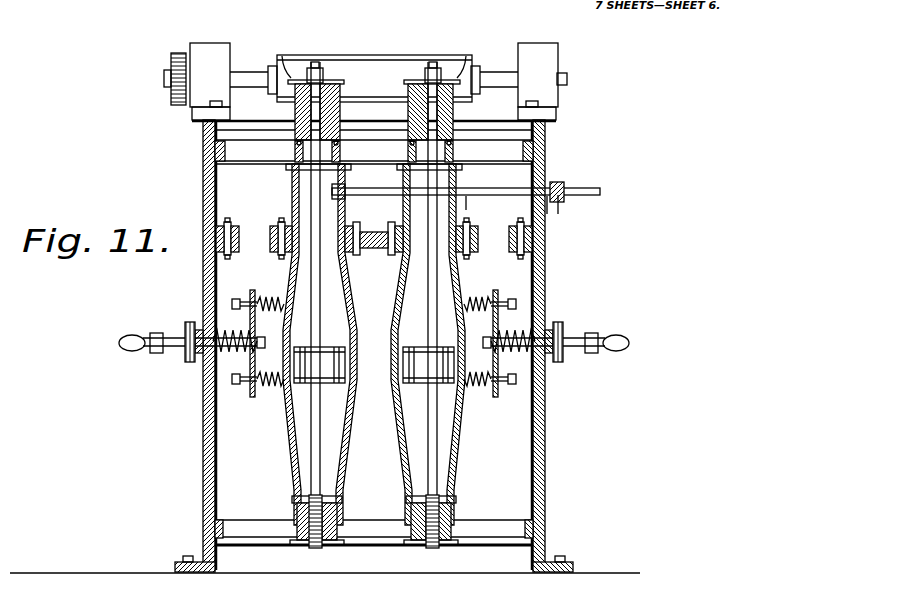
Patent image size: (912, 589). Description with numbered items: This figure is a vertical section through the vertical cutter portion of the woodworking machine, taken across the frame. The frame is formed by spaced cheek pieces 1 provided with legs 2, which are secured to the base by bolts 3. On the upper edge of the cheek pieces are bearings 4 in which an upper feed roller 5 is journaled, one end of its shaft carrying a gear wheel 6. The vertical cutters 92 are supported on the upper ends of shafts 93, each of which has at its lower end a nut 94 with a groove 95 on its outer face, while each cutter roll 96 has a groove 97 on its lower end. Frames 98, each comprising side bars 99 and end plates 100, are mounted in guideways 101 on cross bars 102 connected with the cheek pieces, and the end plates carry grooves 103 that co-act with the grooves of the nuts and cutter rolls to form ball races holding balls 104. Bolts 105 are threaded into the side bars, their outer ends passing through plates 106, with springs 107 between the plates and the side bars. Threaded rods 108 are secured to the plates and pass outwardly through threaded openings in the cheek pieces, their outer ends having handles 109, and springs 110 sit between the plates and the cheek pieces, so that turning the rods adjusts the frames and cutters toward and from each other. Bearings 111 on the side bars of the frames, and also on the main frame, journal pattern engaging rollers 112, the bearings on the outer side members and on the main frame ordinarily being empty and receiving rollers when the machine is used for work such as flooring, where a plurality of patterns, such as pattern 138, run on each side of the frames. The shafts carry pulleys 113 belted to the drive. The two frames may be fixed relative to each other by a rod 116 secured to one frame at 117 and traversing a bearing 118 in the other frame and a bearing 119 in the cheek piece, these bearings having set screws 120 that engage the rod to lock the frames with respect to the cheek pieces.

The cheek pieces 1 is at (206, 258).
The legs 2 is at (212, 555).
The bolts 3 is at (178, 560).
The bearings 4 is at (378, 81).
The upper feed rollers 5 is at (374, 66).
The gear wheels 6 is at (168, 60).
The vertical cutters 92 is at (284, 66).
The shafts 93 is at (312, 188).
The nuts 94 is at (292, 505).
The grooves 95 is at (344, 522).
The cutter rolls 96 is at (318, 66).
The grooves 97 is at (294, 144).
The frames 98 is at (374, 344).
The side bars 99 is at (290, 268).
The end plates 100 is at (396, 130).
The guideways 101 is at (264, 165).
The cross bars 102 is at (532, 152).
The grooves 103 is at (375, 531).
The balls 104 is at (348, 100).
The bolts 105 is at (266, 296).
The plates 106 is at (249, 312).
The springs 107 is at (272, 405).
The threaded rods 108 is at (182, 350).
The handles 109 is at (134, 351).
The springs 110 is at (232, 348).
The bearings 111 is at (566, 242).
The pattern engaging rollers 112 is at (566, 262).
The pulleys 113 is at (374, 365).
The rod 116 is at (562, 212).
The securing point 117 is at (346, 190).
The bearing 118 is at (460, 188).
The bearing 119 is at (580, 186).
The set screws 120 is at (470, 200).
The pattern 138 is at (374, 250).